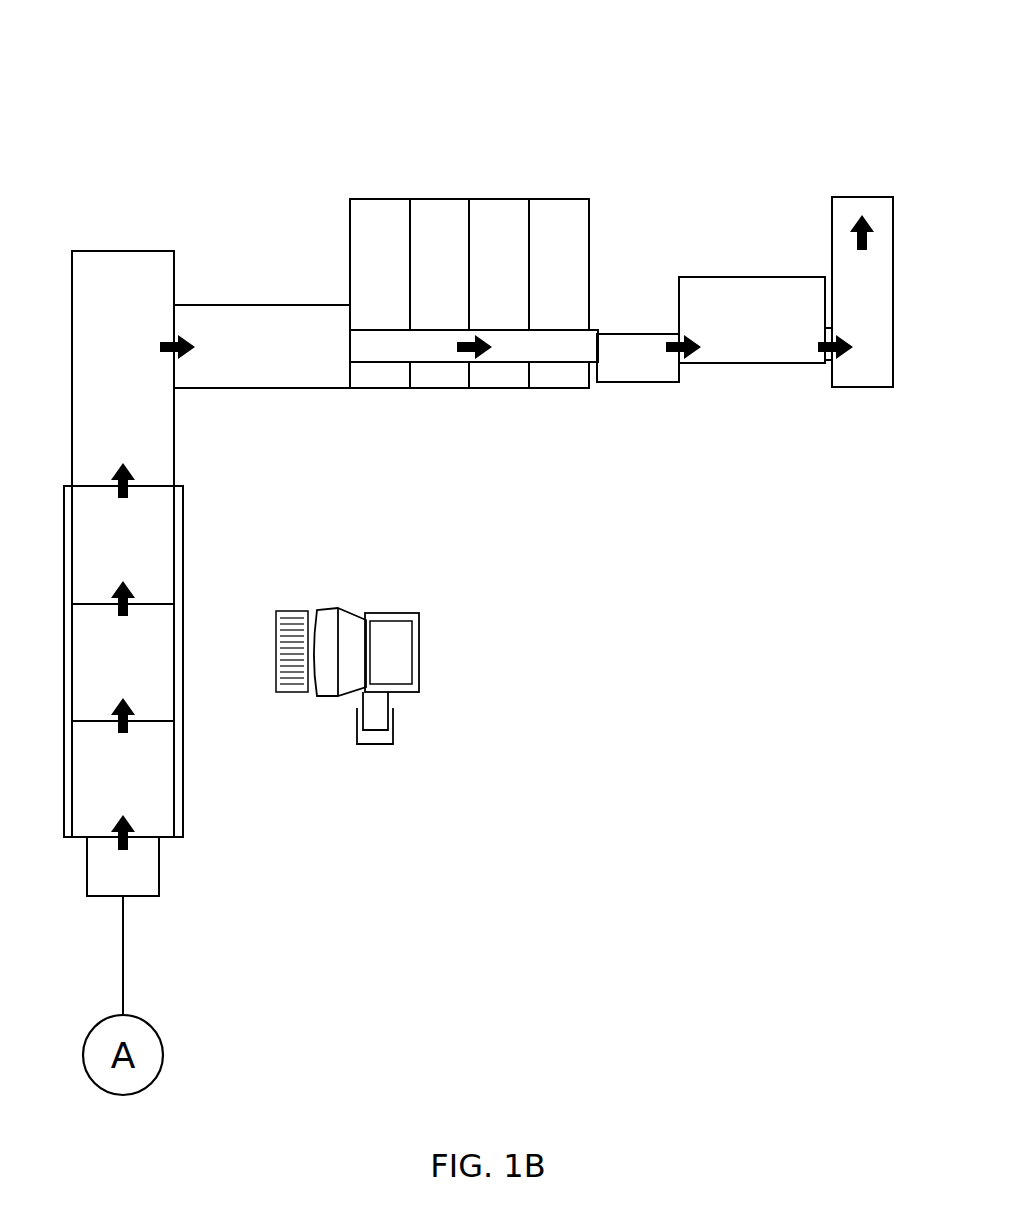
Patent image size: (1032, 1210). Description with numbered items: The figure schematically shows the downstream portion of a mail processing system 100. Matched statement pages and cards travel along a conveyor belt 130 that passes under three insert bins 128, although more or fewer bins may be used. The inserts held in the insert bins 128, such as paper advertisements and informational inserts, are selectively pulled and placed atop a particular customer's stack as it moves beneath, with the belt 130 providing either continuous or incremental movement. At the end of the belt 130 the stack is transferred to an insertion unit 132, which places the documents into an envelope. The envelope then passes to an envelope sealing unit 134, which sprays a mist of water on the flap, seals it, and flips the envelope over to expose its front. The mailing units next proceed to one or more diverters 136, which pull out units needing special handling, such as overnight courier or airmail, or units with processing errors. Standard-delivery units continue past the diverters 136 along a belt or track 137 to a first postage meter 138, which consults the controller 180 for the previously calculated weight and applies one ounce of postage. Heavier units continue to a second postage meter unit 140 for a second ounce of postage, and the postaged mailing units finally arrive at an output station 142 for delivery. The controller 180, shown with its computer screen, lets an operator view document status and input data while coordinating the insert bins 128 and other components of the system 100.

The mail processing system 100 is at (680, 120).
The insert bins 128 is at (105, 554).
The conveyor belt 130 is at (178, 550).
The insertion unit 132 is at (105, 379).
The envelope sealing unit 134 is at (244, 356).
The diverters 136 is at (362, 304).
The belt or track 137 is at (380, 353).
The first postage meter 138 is at (620, 371).
The second postage meter unit 140 is at (734, 331).
The output station 142 is at (844, 303).
The controller 180 is at (403, 645).